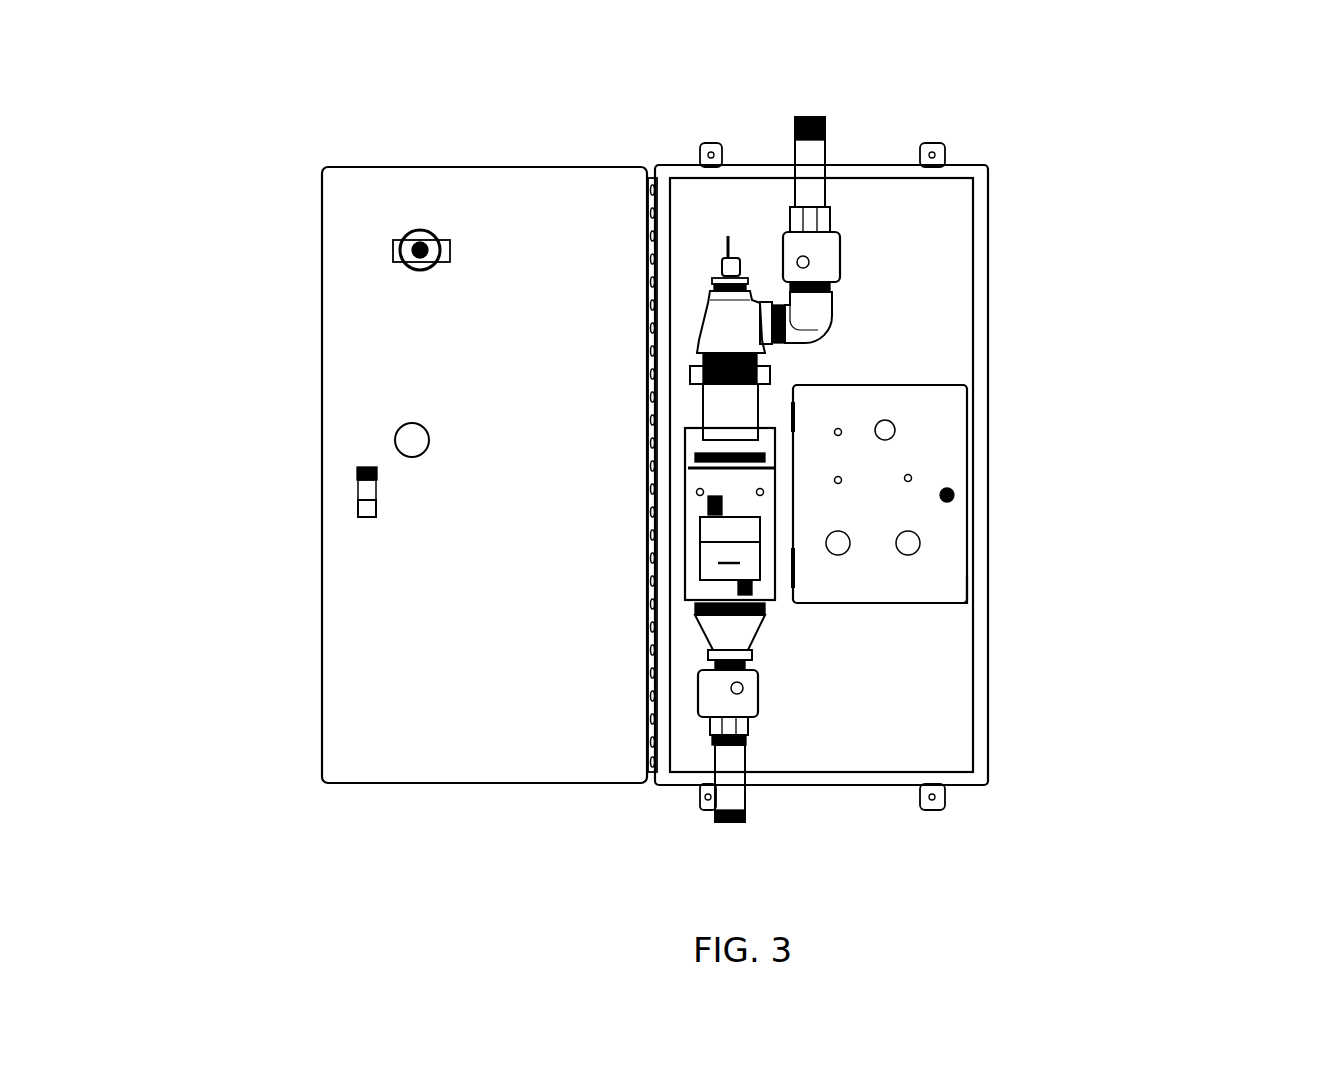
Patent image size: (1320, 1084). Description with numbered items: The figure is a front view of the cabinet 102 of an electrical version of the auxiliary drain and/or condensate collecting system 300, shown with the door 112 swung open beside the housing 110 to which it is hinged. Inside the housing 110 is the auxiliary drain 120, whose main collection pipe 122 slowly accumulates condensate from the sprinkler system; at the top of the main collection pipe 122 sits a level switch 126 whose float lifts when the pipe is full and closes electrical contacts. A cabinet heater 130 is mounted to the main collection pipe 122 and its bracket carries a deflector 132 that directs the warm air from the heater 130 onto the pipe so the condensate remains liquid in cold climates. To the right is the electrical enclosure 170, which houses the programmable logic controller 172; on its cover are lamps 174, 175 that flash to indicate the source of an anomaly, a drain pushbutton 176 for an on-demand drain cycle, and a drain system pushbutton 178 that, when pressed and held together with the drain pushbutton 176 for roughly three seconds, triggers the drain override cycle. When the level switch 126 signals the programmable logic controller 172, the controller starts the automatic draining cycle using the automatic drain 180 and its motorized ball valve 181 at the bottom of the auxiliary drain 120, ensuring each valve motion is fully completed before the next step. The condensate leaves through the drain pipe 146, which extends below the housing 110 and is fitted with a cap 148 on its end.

The auxiliary drain and/or condensate collecting system 300 is at (1127, 75).
The cabinet 102 is at (1065, 232).
The housing 110 is at (928, 743).
The door 112 is at (453, 732).
The main collection pipe 122 is at (675, 403).
The heater 130 is at (638, 563).
The deflector 132 is at (683, 512).
The auxiliary drain 120 is at (496, 464).
The level switch 126 is at (698, 244).
The electrical enclosure 170 is at (998, 491).
The programmable logic controller 172 is at (933, 573).
The lamp 174 is at (923, 467).
The lamp 175 is at (853, 400).
The drain pushbutton 176 is at (836, 570).
The drain system pushbutton 178 is at (935, 548).
The automatic drain 180 is at (591, 772).
The motorized ball valve 181 is at (728, 698).
The drain pipe 146 is at (745, 824).
The cap 148 is at (768, 833).